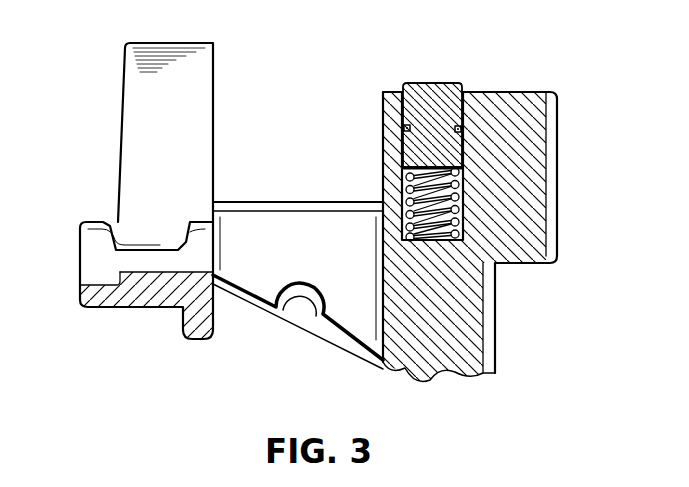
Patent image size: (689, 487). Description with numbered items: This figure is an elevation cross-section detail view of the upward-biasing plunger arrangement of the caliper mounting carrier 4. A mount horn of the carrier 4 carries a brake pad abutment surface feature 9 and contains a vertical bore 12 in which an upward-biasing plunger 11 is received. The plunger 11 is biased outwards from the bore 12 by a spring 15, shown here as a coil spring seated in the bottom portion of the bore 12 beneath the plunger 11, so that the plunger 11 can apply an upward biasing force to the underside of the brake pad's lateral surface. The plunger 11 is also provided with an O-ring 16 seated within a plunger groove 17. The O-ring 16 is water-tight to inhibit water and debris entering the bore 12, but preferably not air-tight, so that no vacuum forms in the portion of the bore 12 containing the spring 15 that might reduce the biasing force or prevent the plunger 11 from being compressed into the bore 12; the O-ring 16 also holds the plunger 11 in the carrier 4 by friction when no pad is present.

The caliper mounting carrier 4 is at (95, 243).
The brake pad abutment surface feature 9 is at (147, 82).
The upward-biasing plunger 11 is at (443, 90).
The vertical bore 12 is at (400, 110).
The spring 15 is at (432, 236).
The O-ring 16 is at (461, 129).
The plunger groove 17 is at (405, 134).